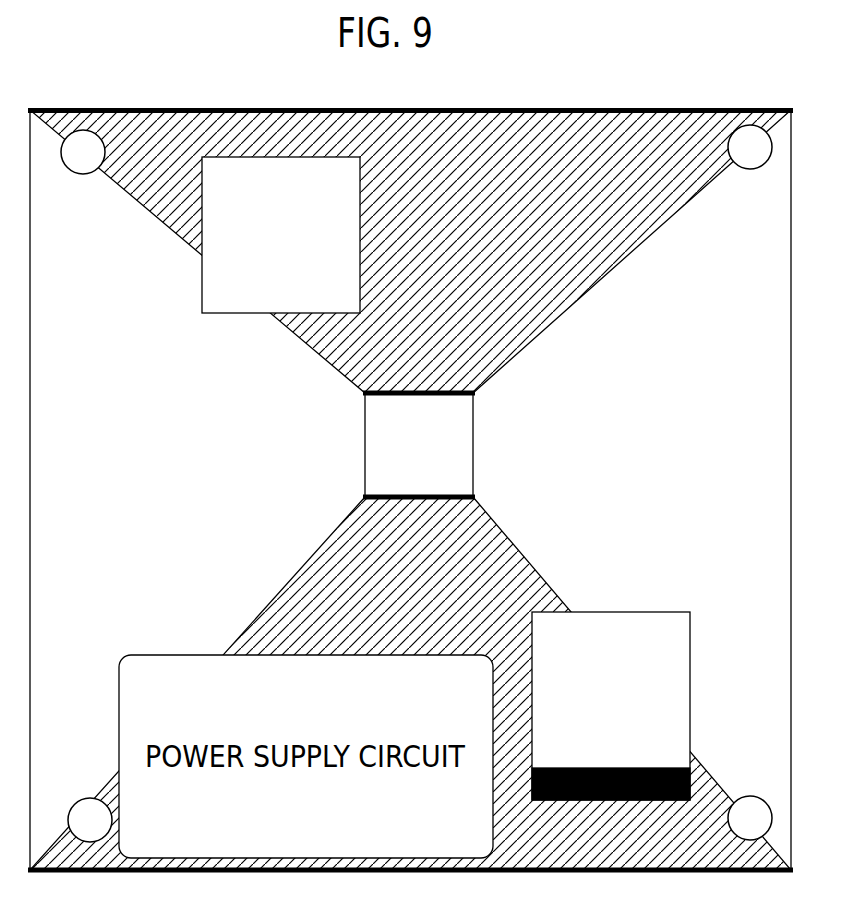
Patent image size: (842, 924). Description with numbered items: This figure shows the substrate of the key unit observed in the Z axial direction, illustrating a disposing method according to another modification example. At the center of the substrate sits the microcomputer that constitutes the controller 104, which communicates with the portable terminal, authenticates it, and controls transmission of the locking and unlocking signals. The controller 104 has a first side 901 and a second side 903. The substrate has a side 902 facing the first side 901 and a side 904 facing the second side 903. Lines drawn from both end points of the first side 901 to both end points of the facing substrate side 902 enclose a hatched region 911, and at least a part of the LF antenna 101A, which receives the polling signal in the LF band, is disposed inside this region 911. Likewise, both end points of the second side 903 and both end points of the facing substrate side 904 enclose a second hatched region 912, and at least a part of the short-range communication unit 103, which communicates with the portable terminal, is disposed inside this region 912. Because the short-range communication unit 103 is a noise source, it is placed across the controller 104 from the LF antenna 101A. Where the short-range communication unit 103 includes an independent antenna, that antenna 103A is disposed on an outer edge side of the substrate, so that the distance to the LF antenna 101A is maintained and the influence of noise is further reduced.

The side of the substrate facing the first side 902 is at (410, 93).
The side of the substrate facing the second side 904 is at (410, 891).
The hatched region 911 is at (550, 282).
The hatched region 912 is at (298, 623).
The first side of the microcomputer 901 is at (445, 394).
The second side of the microcomputer 903 is at (397, 496).
The controller 104 is at (419, 445).
The LF antenna 101A is at (281, 235).
The short-range communication unit 103 is at (611, 706).
The antenna of the short-range communication unit 103A is at (611, 785).